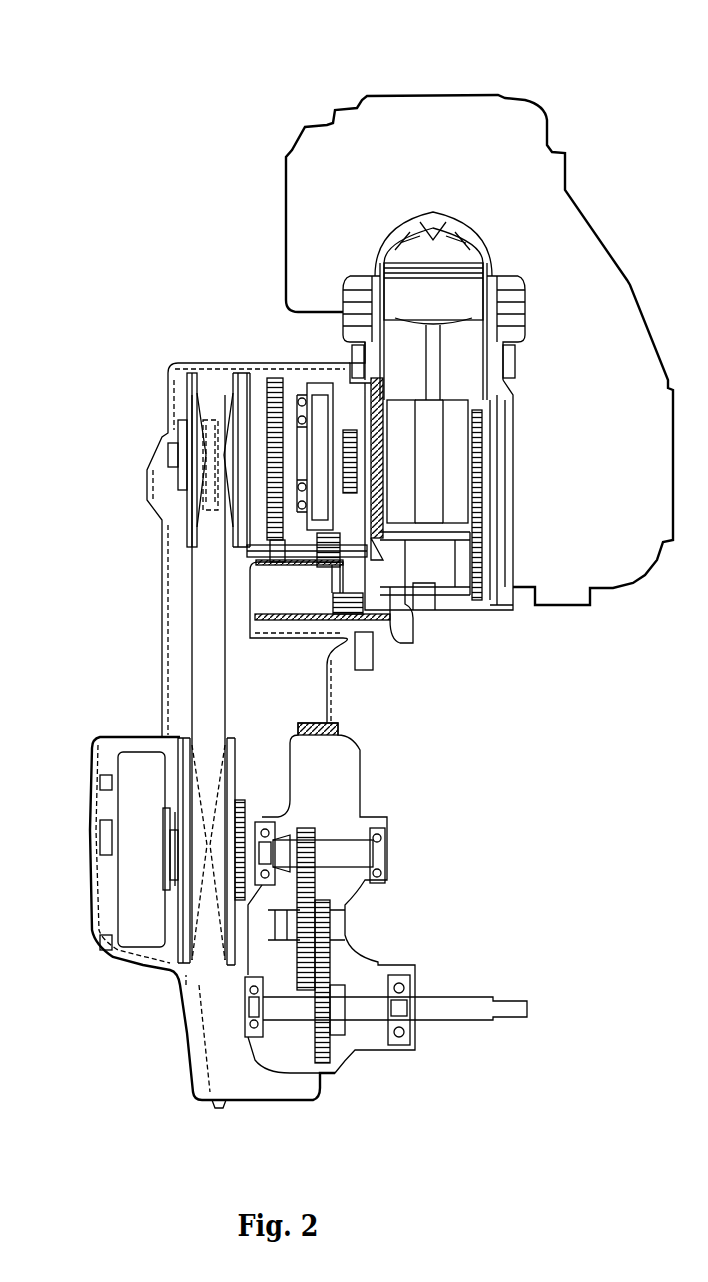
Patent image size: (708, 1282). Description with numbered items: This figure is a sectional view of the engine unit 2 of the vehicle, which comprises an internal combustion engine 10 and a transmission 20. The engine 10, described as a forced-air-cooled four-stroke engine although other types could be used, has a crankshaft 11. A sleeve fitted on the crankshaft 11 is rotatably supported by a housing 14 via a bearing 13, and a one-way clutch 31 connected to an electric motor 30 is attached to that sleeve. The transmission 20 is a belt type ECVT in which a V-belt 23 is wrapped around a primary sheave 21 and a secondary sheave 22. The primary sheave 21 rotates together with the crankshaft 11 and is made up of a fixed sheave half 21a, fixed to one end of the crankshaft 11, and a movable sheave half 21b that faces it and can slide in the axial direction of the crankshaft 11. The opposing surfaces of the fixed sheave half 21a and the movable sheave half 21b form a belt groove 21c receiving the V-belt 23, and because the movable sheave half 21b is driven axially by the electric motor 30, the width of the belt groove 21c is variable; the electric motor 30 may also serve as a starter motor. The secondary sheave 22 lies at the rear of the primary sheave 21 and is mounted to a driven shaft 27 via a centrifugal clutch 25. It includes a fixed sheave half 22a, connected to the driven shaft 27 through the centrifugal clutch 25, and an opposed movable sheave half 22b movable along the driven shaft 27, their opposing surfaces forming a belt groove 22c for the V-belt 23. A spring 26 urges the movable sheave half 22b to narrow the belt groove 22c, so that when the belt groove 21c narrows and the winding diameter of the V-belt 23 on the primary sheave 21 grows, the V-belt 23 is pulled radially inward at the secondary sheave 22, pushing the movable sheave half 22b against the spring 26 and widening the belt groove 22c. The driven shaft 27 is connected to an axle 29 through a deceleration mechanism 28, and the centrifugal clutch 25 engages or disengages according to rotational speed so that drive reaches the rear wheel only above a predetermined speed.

The engine unit 2 is at (551, 80).
The internal combustion engine 10 is at (451, 461).
The crankshaft 11 is at (467, 458).
The bearing 13 is at (387, 410).
The housing 14 is at (283, 390).
The transmission 20 is at (160, 494).
The primary sheave 21 is at (181, 427).
The fixed sheave half 21a is at (187, 433).
The movable sheave half 21b is at (248, 395).
The belt groove 21c is at (205, 393).
The secondary sheave 22 is at (198, 878).
The fixed sheave half 22a is at (235, 945).
The movable sheave half 22b is at (185, 963).
The belt groove 22c is at (226, 727).
The V-belt 23 is at (226, 670).
The centrifugal clutch 25 is at (127, 833).
The spring 26 is at (165, 848).
The driven shaft 27 is at (358, 852).
The deceleration mechanism 28 is at (315, 880).
The axle 29 is at (447, 1000).
The electric motor 30 is at (404, 645).
The one-way clutch 31 is at (326, 395).